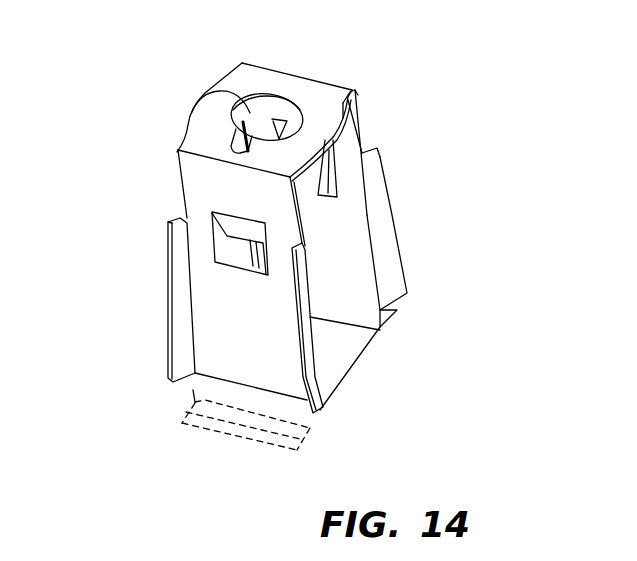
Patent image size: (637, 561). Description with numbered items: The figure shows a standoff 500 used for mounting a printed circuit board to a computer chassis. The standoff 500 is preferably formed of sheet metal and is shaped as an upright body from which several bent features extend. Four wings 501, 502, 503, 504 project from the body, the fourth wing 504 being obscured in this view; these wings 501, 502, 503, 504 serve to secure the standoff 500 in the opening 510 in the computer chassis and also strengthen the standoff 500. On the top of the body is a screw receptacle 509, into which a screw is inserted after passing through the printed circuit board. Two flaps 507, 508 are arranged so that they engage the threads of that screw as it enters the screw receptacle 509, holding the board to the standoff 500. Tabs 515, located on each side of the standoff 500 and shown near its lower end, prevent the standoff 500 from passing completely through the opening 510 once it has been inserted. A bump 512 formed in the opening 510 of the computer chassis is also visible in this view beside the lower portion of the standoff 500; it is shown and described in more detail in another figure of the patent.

The standoff 500 is at (161, 71).
The wing 501 is at (183, 355).
The wing 502 is at (317, 417).
The wing 503 is at (392, 262).
The wing 504 is at (306, 73).
The flap 507 is at (235, 225).
The flap 508 is at (300, 193).
The screw receptacle 509 is at (258, 120).
The opening 510 is at (340, 357).
The bump 512 is at (380, 330).
The tabs 515 is at (229, 440).